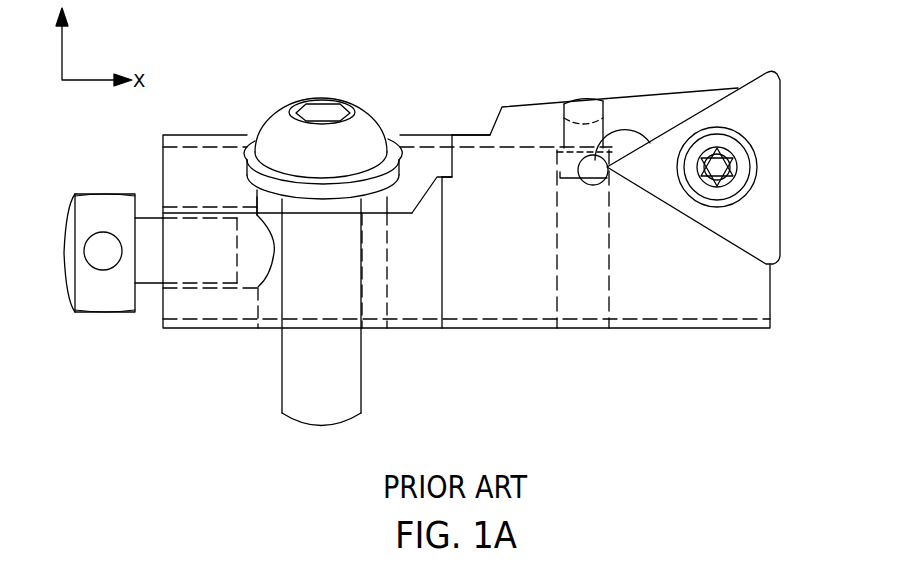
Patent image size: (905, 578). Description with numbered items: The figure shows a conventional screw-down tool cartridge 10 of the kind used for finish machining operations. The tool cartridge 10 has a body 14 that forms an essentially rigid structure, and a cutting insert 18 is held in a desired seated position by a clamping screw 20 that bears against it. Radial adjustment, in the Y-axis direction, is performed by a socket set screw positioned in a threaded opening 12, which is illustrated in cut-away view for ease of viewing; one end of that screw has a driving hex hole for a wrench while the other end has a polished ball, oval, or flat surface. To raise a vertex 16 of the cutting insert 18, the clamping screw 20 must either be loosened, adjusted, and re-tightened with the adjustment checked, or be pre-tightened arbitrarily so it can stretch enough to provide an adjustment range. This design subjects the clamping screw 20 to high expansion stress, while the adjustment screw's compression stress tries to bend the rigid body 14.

The tool cartridge 10 is at (178, 396).
The threaded opening 12 is at (582, 285).
The body 14 is at (516, 254).
The vertex 16 is at (752, 107).
The cutting insert 18 is at (769, 242).
The clamping screw 20 is at (363, 133).